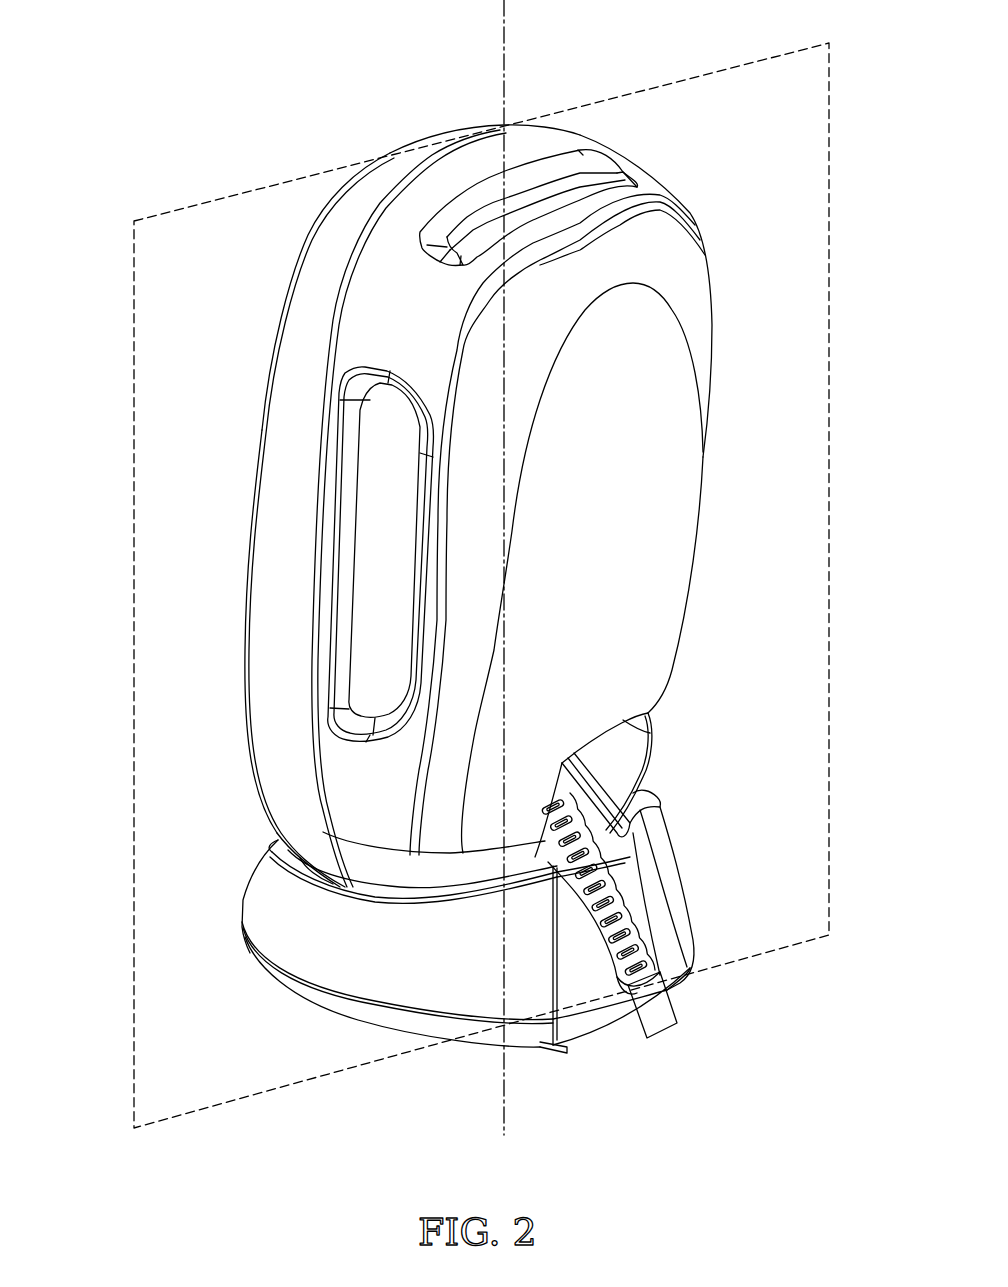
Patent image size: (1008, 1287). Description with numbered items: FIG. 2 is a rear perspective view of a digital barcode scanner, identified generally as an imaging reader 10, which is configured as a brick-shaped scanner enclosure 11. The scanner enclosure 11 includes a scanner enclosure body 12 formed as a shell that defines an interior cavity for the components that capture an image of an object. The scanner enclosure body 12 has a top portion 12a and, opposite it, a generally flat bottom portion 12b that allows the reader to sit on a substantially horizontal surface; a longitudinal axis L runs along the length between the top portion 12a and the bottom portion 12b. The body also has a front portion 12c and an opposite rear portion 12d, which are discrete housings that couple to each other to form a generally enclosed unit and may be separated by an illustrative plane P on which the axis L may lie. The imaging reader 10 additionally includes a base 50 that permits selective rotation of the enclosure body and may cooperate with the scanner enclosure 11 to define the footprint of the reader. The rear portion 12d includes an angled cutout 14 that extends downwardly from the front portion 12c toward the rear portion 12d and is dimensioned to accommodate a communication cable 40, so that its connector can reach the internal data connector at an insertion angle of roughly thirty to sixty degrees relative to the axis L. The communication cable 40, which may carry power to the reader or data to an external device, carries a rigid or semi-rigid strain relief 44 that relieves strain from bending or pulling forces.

The imaging reader 10 is at (116, 829).
The scanner enclosure 11 is at (700, 282).
The scanner enclosure body 12 is at (685, 252).
The top portion 12a is at (455, 118).
The bottom portion 12b is at (437, 1054).
The front portion 12c is at (240, 511).
The rear portion 12d is at (714, 543).
The angled cutout 14 is at (625, 764).
The communication cable 40 is at (673, 1022).
The strain relief 44 is at (655, 985).
The base 50 is at (352, 968).